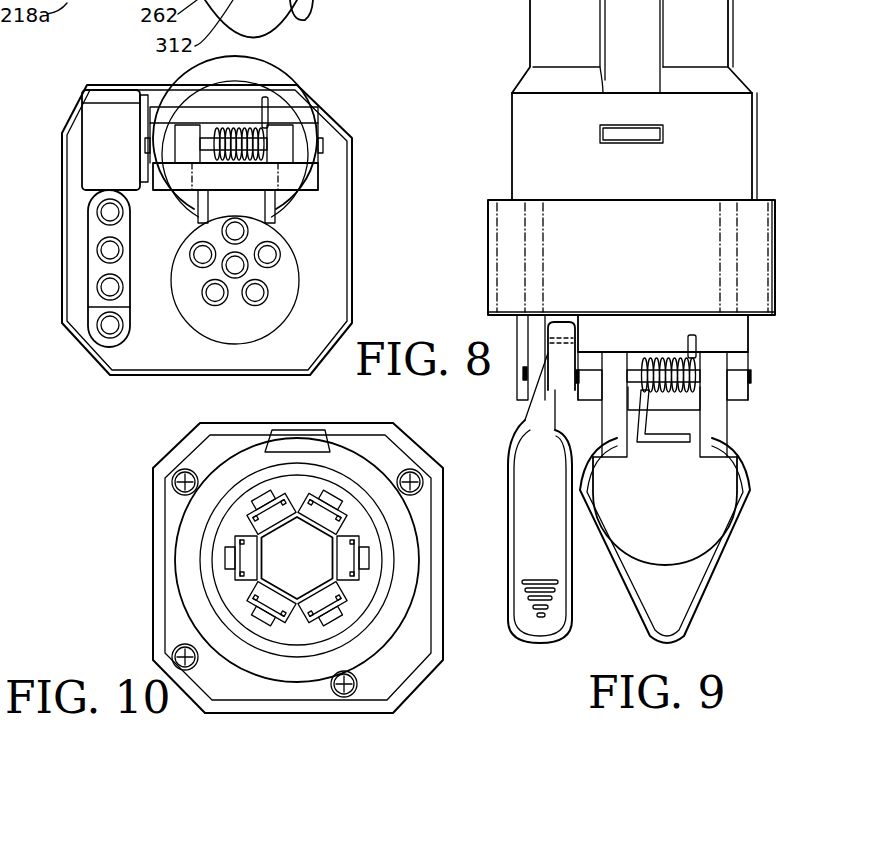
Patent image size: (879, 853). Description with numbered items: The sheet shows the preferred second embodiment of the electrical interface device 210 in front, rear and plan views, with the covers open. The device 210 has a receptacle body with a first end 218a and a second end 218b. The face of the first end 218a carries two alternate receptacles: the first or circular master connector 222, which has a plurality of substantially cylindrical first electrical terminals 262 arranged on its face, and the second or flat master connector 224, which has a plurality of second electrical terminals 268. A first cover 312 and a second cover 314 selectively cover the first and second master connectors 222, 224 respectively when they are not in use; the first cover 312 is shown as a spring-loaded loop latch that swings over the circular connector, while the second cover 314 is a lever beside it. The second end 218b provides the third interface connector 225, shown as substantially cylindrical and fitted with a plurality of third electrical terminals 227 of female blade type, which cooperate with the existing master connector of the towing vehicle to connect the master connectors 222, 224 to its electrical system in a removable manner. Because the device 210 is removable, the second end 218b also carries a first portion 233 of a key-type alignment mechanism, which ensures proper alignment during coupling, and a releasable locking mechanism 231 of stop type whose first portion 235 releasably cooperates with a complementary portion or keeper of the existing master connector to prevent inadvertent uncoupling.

In FIG. 8, the device 210 is at (360, 103).
In FIG. 10, the device 210 is at (135, 541).
In FIG. 8, the first end 218a is at (174, 365).
In FIG. 9, the first end 218a is at (727, 636).
In FIG. 10, the second end 218b is at (193, 463).
In FIG. 8, the first master connector 222 is at (288, 280).
In FIG. 8, the second master connector 224 is at (97, 230).
In FIG. 10, the third interface connector 225 is at (230, 588).
In FIG. 10, the third electrical terminals 227 is at (236, 612).
In FIG. 10, the releasable locking mechanism 231 is at (314, 417).
In FIG. 9, the releasable locking mechanism 231 is at (589, 124).
In FIG. 9, the first portion of the key-type mechanism 233 is at (623, 8).
In FIG. 10, the first portion of the stop-type mechanism 235 is at (288, 440).
In FIG. 9, the first portion of the stop-type mechanism 235 is at (622, 142).
In FIG. 8, the first electrical terminals 262 is at (287, 252).
In FIG. 8, the second electrical terminals 268 is at (84, 257).
In FIG. 8, the first cover 312 is at (260, 178).
In FIG. 9, the first cover 312 is at (663, 479).
In FIG. 8, the second cover 314 is at (98, 153).
In FIG. 9, the second cover 314 is at (527, 483).